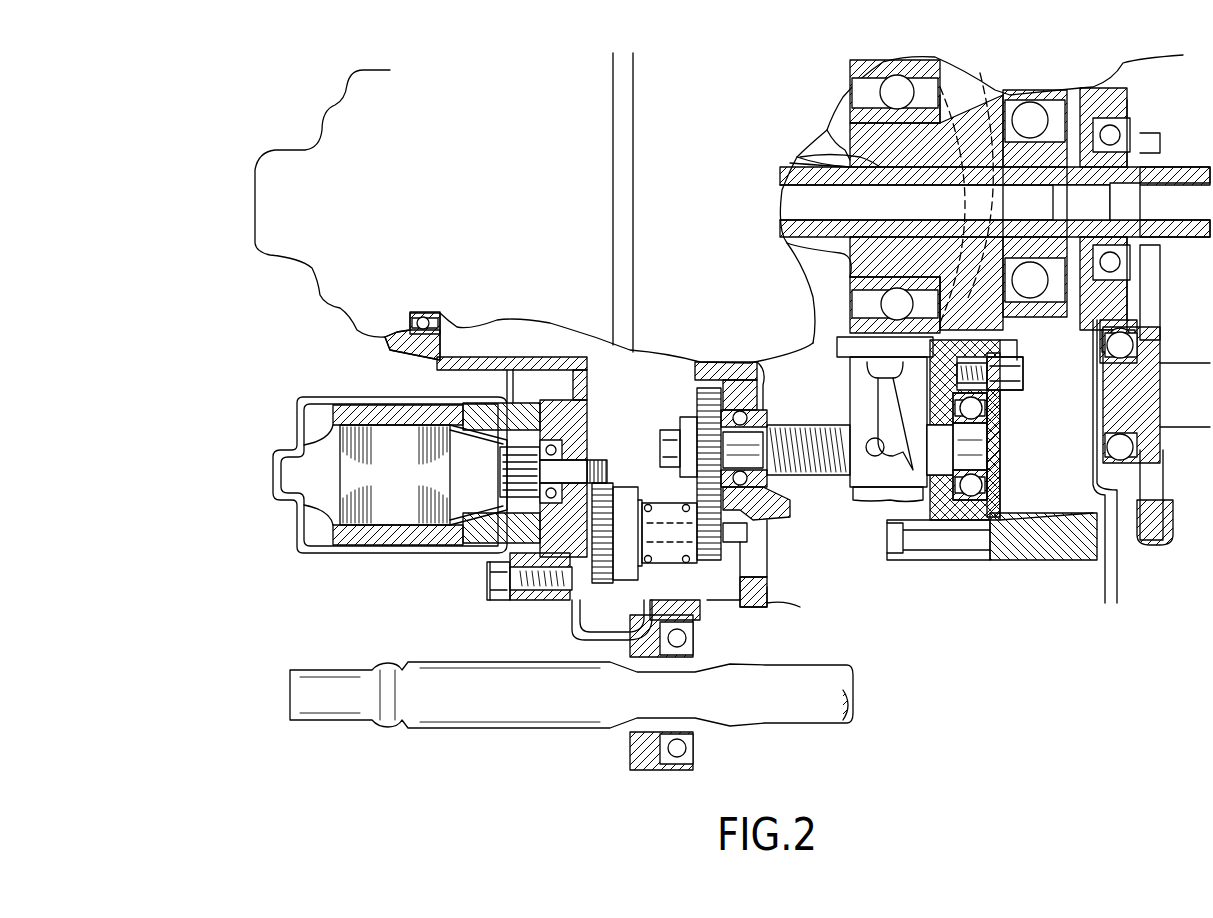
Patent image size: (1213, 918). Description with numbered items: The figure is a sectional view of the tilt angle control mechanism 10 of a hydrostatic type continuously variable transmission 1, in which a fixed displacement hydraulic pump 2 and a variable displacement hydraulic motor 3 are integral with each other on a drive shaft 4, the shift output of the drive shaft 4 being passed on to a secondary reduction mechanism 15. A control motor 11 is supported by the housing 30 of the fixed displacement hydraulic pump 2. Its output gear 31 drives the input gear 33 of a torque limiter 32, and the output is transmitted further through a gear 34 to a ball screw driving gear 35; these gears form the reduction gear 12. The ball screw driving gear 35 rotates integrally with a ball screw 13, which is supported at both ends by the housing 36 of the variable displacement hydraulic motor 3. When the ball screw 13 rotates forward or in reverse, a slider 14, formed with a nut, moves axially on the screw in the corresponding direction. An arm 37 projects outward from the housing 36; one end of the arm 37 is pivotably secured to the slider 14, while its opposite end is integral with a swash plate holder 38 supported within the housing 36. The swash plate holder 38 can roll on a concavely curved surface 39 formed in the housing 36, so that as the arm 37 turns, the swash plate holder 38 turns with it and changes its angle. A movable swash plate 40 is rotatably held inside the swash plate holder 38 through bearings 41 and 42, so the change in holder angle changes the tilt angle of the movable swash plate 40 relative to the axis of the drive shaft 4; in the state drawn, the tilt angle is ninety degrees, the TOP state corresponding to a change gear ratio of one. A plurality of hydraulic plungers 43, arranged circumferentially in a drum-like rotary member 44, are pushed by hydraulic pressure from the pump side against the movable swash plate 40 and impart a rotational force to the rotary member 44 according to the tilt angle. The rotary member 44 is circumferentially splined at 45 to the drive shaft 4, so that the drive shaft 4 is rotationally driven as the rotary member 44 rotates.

The hydrostatic type continuously variable transmission 1 is at (282, 110).
The fixed displacement hydraulic pump 2 is at (493, 190).
The variable displacement hydraulic motor 3 is at (684, 233).
The drive shaft 4 is at (893, 183).
The tilt angle control mechanism 10 is at (448, 617).
The control motor 11 is at (343, 517).
The reduction gear 12 is at (733, 593).
The ball screw 13 is at (820, 477).
The slider 14 is at (887, 480).
The secondary reduction mechanism 15 is at (1177, 560).
The housing 30 is at (530, 348).
The output gear 31 is at (592, 463).
The torque limiter 32 is at (627, 493).
The input gear 33 is at (583, 595).
The gear 34 is at (700, 560).
The ball screw driving gear 35 is at (703, 410).
The housing 36 is at (977, 327).
The arm 37 is at (853, 408).
The swash plate holder 38 is at (977, 297).
The concavely curved surface 39 is at (990, 92).
The movable swash plate 40 is at (863, 293).
The bearing 41 is at (857, 328).
The bearing 42 is at (913, 295).
The hydraulic plunger 43 is at (833, 130).
The rotary member 44 is at (800, 157).
The spline 45 is at (790, 163).